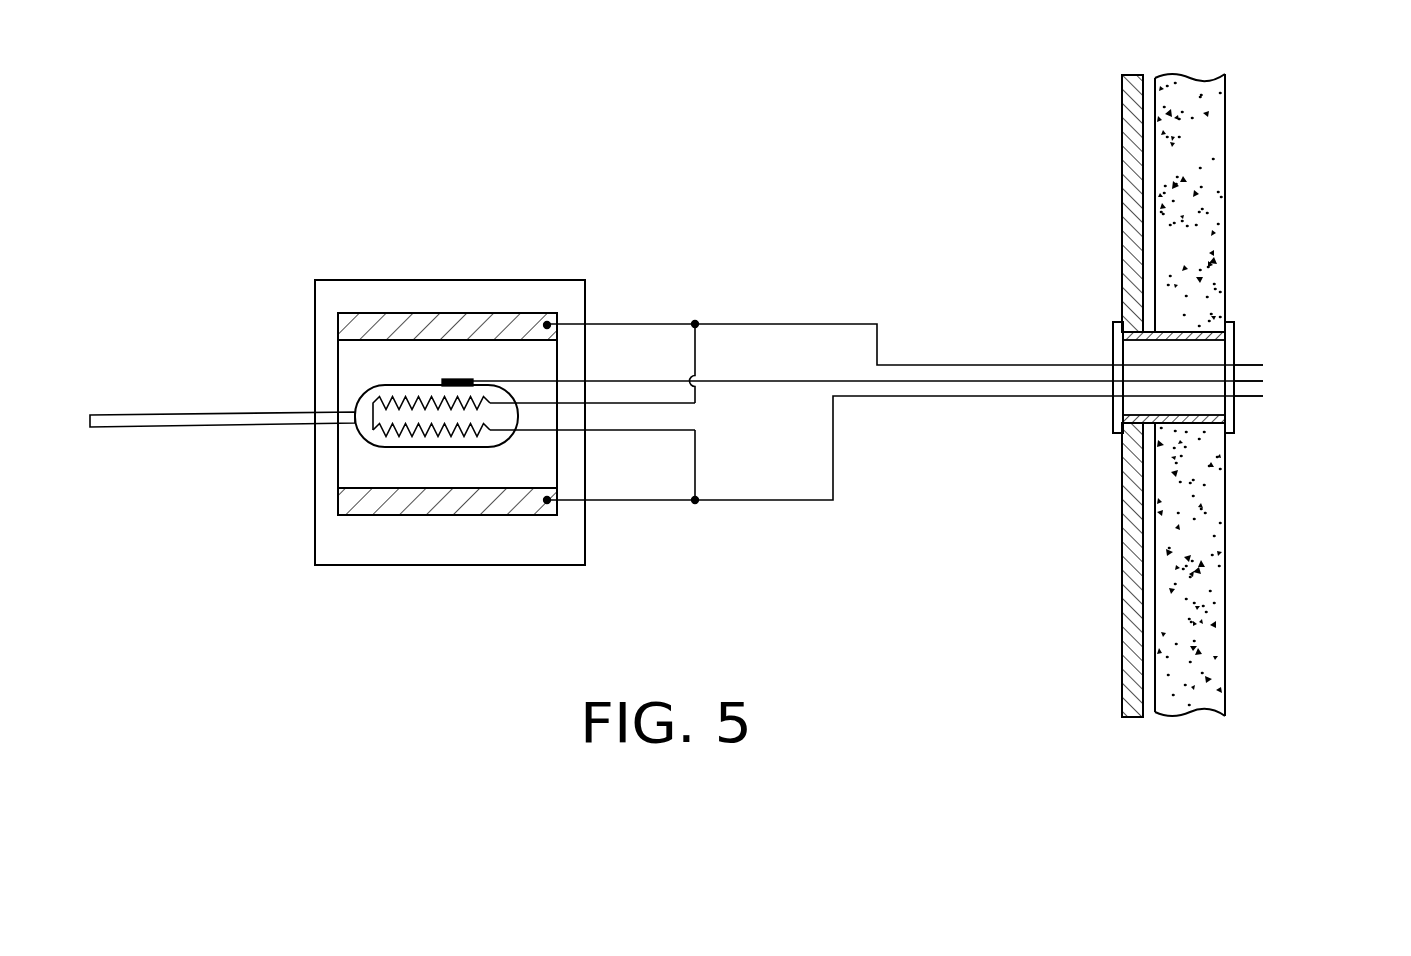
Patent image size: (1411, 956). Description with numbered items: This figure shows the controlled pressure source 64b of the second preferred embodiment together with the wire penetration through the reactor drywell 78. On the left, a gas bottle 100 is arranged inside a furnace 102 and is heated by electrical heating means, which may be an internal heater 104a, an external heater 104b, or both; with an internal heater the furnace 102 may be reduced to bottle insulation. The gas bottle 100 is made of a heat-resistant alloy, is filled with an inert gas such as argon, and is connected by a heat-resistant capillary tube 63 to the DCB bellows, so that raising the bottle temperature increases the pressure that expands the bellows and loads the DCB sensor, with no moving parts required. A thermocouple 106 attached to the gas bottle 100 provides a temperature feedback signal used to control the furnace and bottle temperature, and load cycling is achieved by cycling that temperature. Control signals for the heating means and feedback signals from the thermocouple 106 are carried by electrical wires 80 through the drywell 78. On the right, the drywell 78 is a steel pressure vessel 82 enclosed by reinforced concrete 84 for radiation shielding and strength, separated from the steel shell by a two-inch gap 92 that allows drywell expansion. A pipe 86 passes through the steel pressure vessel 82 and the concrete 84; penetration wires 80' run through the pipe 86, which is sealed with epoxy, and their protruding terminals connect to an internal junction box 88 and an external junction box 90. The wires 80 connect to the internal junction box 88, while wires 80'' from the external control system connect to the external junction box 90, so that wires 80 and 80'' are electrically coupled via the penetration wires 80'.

The heat-resistant capillary tube 63 is at (187, 428).
The controlled pressure source 64b is at (438, 248).
The drywell 78 is at (1156, 374).
The electrical wires 80 is at (1174, 384).
The penetration wires 80' is at (1227, 349).
The electrical wires from the control system 80'' is at (1314, 363).
The steel pressure vessel 82 is at (1122, 545).
The reinforced concrete 84 is at (1210, 210).
The pipe 86 is at (1196, 418).
The internal junction box 88 is at (1113, 422).
The external junction box 90 is at (1236, 428).
The gap 92 is at (1148, 82).
The gas bottle 100 is at (496, 447).
The furnace 102 is at (413, 540).
The internal heater 104a is at (358, 436).
The external heater 104b is at (471, 318).
The thermocouple 106 is at (446, 380).